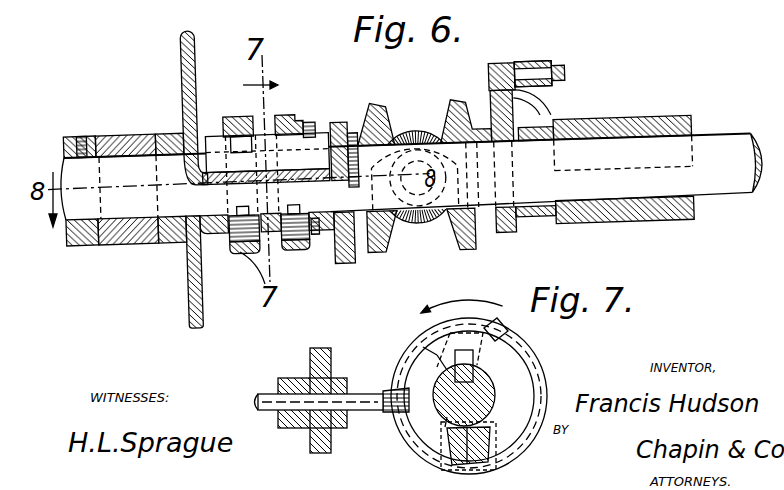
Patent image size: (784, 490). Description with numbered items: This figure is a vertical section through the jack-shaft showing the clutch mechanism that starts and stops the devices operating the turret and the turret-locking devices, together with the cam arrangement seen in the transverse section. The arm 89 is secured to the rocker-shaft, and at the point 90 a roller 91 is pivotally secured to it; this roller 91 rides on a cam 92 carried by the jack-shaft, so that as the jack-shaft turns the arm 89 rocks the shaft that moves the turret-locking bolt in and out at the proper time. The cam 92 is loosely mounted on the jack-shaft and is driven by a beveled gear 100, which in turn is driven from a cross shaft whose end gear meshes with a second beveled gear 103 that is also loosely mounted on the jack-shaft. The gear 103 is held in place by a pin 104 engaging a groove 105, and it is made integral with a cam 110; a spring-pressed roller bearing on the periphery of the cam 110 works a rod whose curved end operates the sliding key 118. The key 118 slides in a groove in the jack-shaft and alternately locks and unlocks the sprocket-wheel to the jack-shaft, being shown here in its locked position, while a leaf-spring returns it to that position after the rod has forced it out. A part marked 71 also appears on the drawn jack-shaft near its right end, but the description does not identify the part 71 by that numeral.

The sliding key 118 is at (286, 140).
The pin 104 is at (356, 130).
The roller 91 is at (498, 72).
The pivot point 90 is at (538, 72).
The arm 89 is at (556, 106).
The sleeve 71 is at (700, 143).
The cam 92 is at (524, 223).
The beveled gear 100 is at (448, 248).
The second beveled gear 103 is at (380, 262).
The groove 105 is at (358, 212).
The cam 110 is at (333, 240).